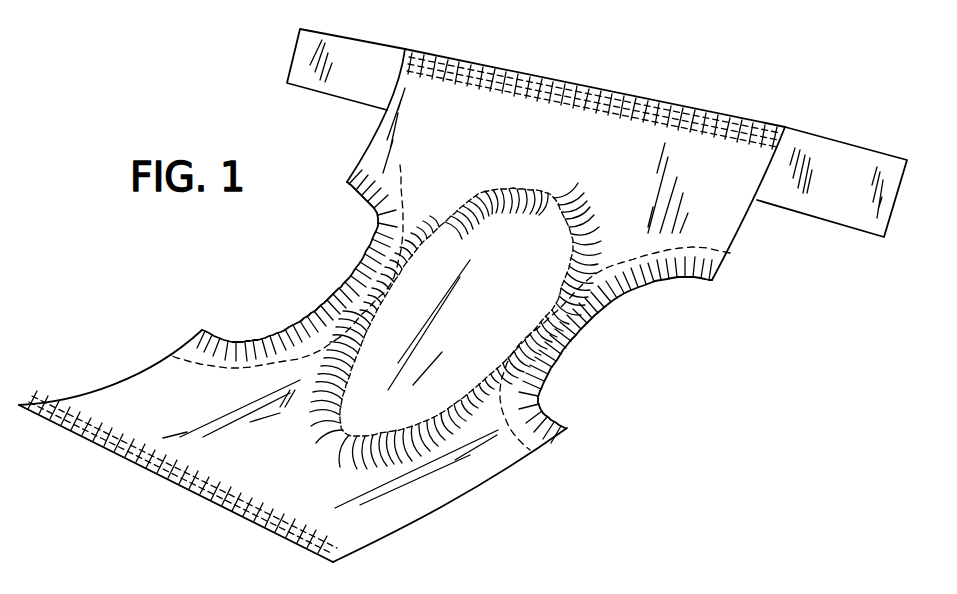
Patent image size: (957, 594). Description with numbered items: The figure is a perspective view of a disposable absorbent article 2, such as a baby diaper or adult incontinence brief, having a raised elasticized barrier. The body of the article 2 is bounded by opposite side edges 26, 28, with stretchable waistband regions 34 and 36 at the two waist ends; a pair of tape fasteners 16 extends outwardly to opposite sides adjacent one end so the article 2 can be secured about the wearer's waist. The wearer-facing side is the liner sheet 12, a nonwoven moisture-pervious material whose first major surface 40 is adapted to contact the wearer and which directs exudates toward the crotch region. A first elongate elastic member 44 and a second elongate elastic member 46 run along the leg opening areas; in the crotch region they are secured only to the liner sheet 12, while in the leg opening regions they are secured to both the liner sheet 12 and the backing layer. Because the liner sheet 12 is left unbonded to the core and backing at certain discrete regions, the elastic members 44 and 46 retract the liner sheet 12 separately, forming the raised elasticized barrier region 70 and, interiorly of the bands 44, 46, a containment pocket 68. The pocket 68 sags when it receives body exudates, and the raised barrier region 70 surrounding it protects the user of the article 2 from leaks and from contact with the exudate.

The absorbent article 2 is at (237, 288).
The liner sheet 12 is at (488, 464).
The tape fasteners 16 is at (290, 60).
The first side edge 26 is at (373, 137).
The side edge 28 is at (450, 503).
The stretchable waistband region 34 is at (640, 93).
The stretchable waistband region 36 is at (263, 523).
The first major surface 40 is at (372, 517).
The first elongate elastic member 44 is at (233, 370).
The second elongate elastic member 46 is at (402, 187).
The containment pocket 68 is at (519, 258).
The raised elasticized barrier region 70 is at (493, 372).